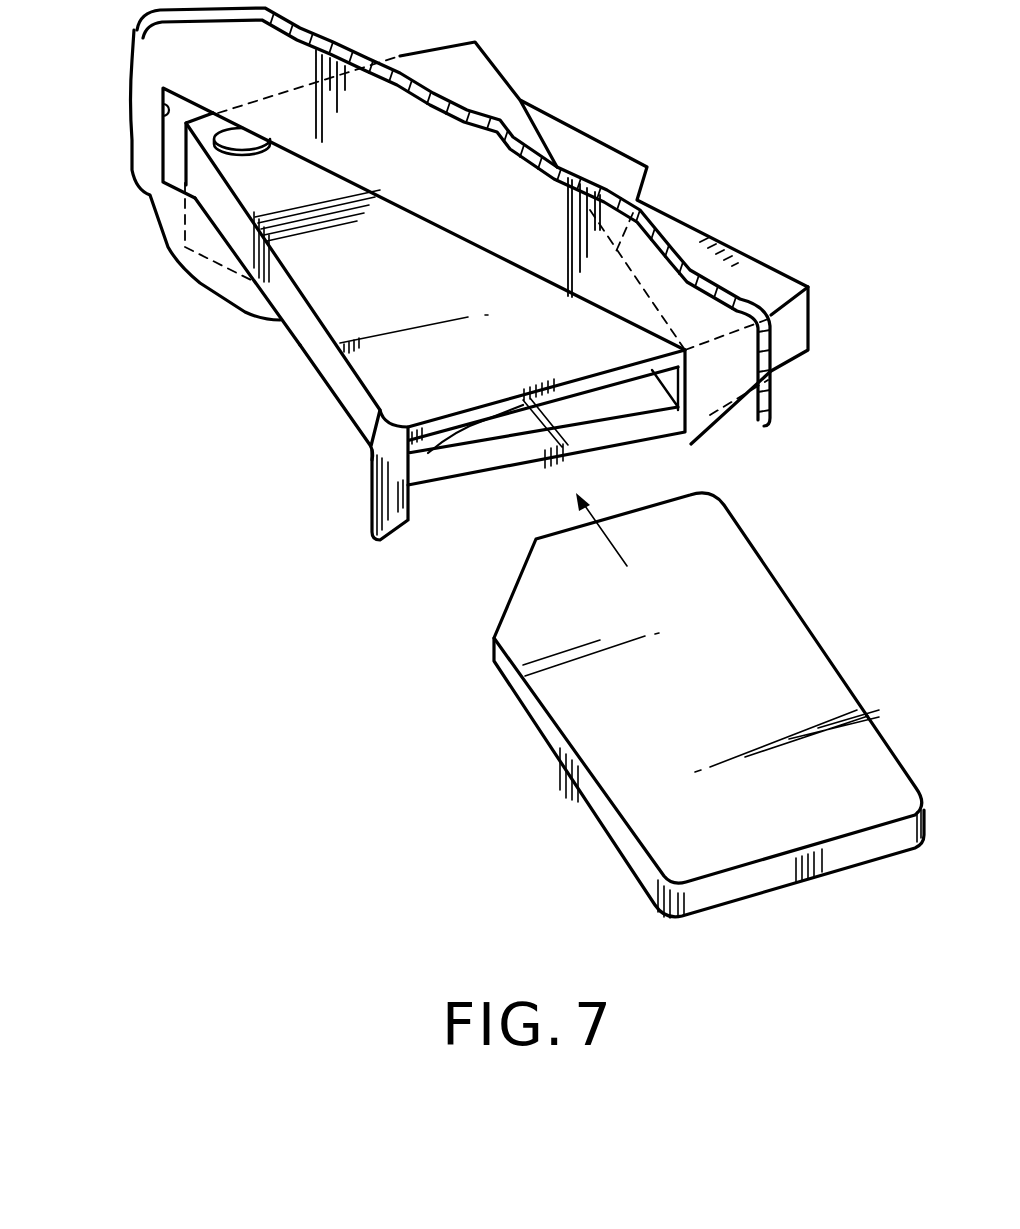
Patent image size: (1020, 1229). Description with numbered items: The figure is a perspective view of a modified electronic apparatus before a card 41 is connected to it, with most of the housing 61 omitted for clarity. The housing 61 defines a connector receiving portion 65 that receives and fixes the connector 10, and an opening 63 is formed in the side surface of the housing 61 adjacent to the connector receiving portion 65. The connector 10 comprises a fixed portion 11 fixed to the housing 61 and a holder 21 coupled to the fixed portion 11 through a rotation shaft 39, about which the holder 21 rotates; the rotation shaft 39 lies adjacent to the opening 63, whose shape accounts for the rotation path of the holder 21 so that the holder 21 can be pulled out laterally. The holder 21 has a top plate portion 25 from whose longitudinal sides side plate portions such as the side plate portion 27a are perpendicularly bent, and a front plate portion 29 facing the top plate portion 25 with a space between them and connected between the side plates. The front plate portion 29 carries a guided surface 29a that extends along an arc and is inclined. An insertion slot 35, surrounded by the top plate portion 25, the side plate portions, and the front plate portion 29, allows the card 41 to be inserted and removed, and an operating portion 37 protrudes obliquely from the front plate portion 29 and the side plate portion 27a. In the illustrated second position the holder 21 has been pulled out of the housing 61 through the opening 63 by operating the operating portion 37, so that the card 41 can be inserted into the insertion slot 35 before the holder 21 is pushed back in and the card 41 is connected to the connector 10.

The connector 10 is at (299, 340).
The fixed portion 11 is at (713, 228).
The holder 21 is at (344, 413).
The top plate portion 25 is at (358, 320).
The side plate portion 27a is at (290, 308).
The front plate portion 29 is at (577, 472).
The guided surface 29a is at (440, 448).
The insertion slot 35 is at (495, 467).
The operating portion 37 is at (370, 517).
The rotation shaft 39 is at (238, 137).
The card 41 is at (816, 658).
The housing 61 is at (152, 153).
The opening 63 is at (160, 123).
The connector receiving portion 65 is at (173, 175).